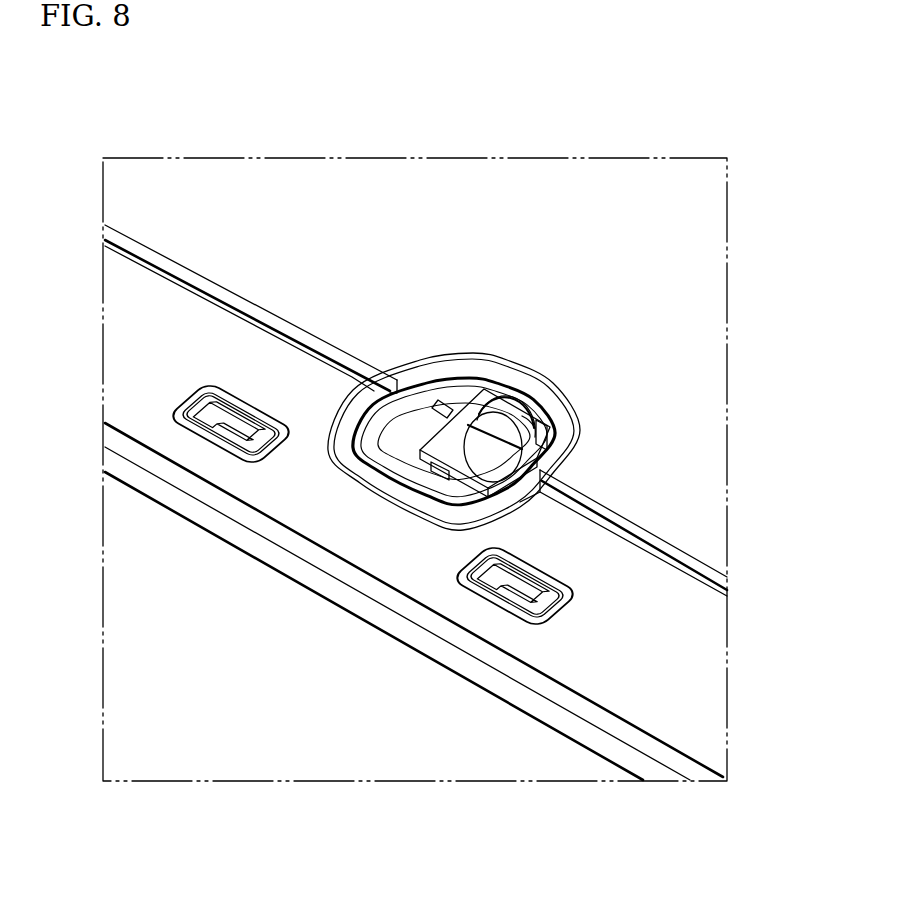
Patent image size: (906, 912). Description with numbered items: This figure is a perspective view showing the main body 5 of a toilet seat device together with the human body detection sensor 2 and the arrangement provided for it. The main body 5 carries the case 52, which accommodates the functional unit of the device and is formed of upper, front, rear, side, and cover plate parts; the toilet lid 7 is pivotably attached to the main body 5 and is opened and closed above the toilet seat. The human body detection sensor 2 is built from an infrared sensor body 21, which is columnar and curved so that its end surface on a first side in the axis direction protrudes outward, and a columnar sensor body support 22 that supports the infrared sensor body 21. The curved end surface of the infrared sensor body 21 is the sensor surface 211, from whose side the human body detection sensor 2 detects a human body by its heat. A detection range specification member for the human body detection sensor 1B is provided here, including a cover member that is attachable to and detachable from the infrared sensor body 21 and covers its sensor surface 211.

The main body 5 is at (162, 178).
The toilet lid 7 is at (218, 747).
The case 52 is at (705, 503).
The detection range specification member for the human body detection sensor 1B is at (487, 453).
The infrared sensor body 21 is at (493, 420).
The human body detection sensor 2 is at (512, 433).
The sensor surface 211 is at (533, 429).
The sensor body support 22 is at (540, 427).